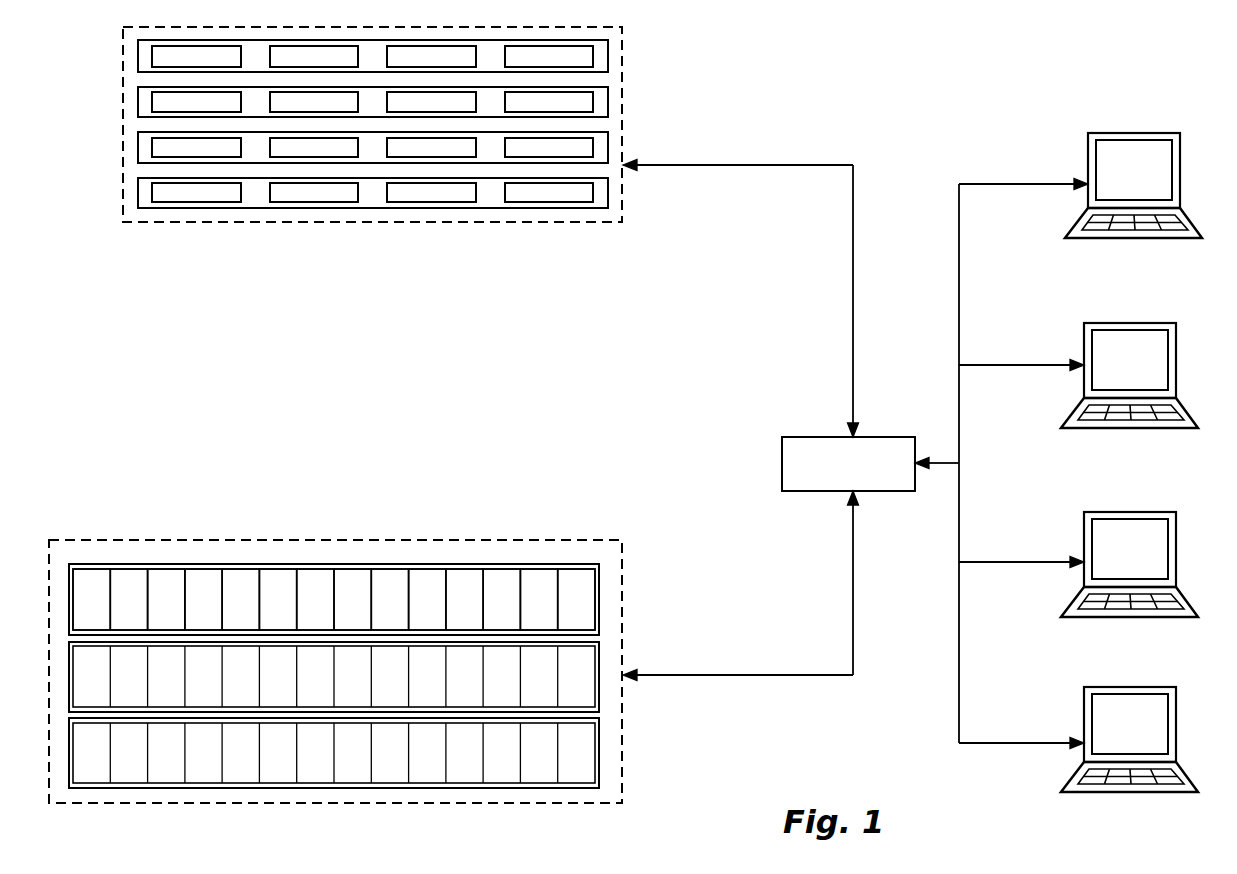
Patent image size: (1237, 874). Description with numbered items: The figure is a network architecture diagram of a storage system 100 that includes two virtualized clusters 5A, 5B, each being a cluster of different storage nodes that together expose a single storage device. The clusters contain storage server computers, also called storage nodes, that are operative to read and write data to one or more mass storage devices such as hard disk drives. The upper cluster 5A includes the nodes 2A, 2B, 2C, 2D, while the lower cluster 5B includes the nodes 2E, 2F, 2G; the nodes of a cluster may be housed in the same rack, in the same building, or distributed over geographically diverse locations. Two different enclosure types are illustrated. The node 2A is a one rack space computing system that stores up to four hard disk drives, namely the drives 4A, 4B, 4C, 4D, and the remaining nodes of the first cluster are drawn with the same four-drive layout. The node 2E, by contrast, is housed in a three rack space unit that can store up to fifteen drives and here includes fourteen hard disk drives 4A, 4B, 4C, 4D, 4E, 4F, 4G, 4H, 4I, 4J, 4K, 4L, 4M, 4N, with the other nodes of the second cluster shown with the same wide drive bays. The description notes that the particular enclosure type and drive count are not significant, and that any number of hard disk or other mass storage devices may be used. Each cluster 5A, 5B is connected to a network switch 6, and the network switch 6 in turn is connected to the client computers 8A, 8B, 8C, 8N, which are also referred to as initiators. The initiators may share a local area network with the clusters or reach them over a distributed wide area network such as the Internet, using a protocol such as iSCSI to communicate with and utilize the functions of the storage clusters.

The storage system 100 is at (928, 104).
The virtualized cluster 5A is at (618, 56).
The virtualized cluster 5B is at (617, 565).
The storage server computer 2A is at (406, 77).
The storage server computer 2B is at (598, 113).
The storage server computer 2C is at (605, 160).
The storage server computer 2D is at (600, 203).
The storage server computer 2E is at (371, 614).
The storage server computer 2F is at (599, 683).
The storage server computer 2G is at (599, 760).
The hard disk drive 4A is at (196, 56).
The hard disk drive 4B is at (314, 56).
The hard disk drive 4C is at (431, 56).
The hard disk drive 4D is at (549, 56).
The hard disk drive 4E is at (240, 599).
The hard disk drive 4F is at (277, 599).
The hard disk drive 4G is at (315, 599).
The hard disk drive 4H is at (352, 599).
The hard disk drive 4I is at (389, 599).
The hard disk drive 4J is at (427, 599).
The hard disk drive 4K is at (464, 599).
The hard disk drive 4L is at (501, 599).
The hard disk drive 4M is at (538, 599).
The hard disk drive 4N is at (576, 599).
The network switch 6 is at (880, 491).
The client computer 8A is at (1141, 213).
The client computer 8B is at (1138, 403).
The client computer 8C is at (1139, 592).
The client computer 8N is at (1139, 767).